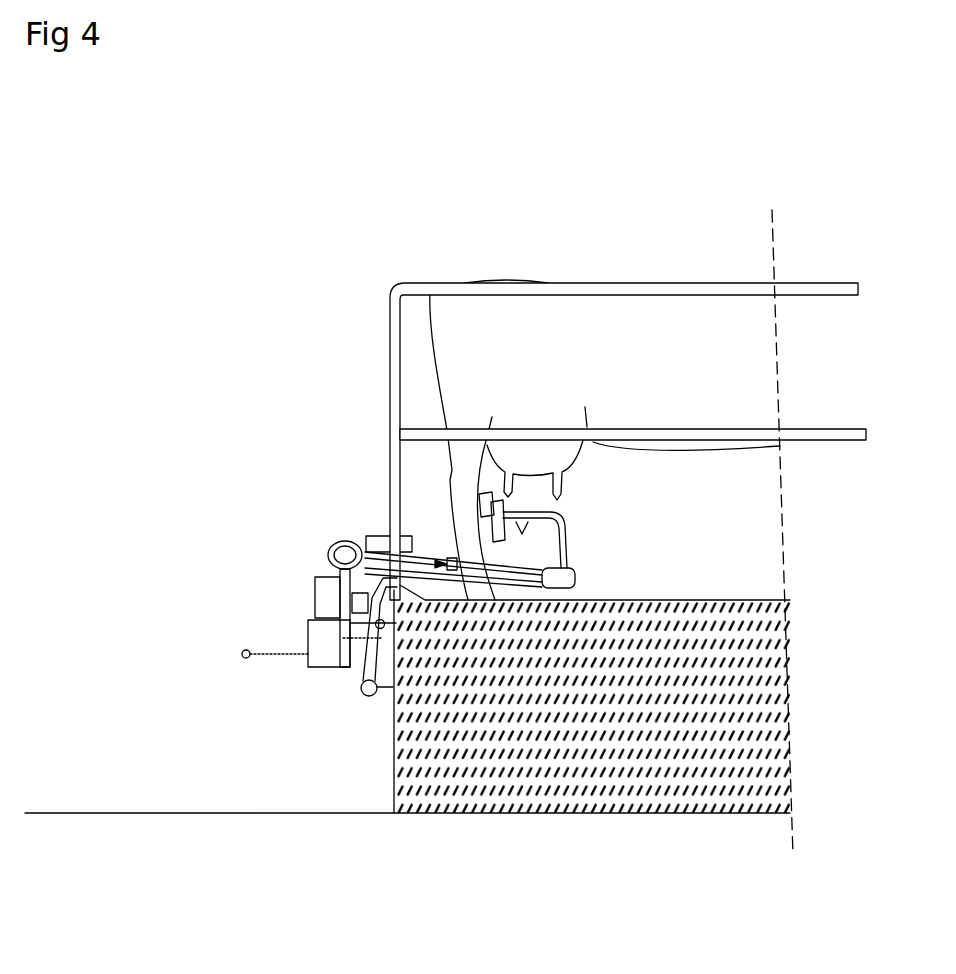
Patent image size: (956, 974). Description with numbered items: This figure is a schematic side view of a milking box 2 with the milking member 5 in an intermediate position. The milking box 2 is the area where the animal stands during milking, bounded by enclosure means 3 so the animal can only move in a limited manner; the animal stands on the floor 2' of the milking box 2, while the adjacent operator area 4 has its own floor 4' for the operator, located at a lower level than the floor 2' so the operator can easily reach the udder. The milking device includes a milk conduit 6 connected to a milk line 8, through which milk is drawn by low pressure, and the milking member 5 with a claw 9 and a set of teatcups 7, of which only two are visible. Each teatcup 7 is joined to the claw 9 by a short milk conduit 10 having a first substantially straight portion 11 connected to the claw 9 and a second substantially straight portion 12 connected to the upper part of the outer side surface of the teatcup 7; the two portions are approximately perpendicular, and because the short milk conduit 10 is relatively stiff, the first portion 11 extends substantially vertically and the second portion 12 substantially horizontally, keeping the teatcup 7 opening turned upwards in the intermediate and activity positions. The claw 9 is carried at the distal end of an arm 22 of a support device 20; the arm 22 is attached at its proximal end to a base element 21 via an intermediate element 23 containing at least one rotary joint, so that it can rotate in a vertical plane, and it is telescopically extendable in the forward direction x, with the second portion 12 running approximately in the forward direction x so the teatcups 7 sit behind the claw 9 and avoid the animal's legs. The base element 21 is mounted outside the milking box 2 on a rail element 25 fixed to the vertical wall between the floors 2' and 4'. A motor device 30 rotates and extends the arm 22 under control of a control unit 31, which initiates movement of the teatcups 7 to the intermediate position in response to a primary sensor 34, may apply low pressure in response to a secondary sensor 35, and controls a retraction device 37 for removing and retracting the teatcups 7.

The milking box 2 is at (624, 369).
The floor of the milking box 2' is at (592, 669).
The enclosure means 3 is at (637, 283).
The operator area 4 is at (65, 746).
The floor of the operator area 4' is at (407, 757).
The milking member 5 is at (598, 525).
The milk conduit 6 is at (363, 663).
The teatcup 7 is at (492, 525).
The milk line 8 is at (363, 694).
The claw 9 is at (575, 578).
The short milk conduit 10 is at (566, 524).
The first substantially straight portion 11 is at (562, 556).
The second substantially straight portion 12 is at (520, 548).
The support device 20 is at (320, 520).
The base element 21 is at (338, 571).
The arm 22 is at (440, 560).
The intermediate element 23 is at (343, 564).
The rail element 25 is at (352, 602).
The motor device 30 is at (378, 537).
The control unit 31 is at (318, 639).
The primary sensor 34 is at (242, 657).
The secondary sensor 35 is at (328, 610).
The retraction device 37 is at (330, 607).
The forward direction x is at (410, 548).